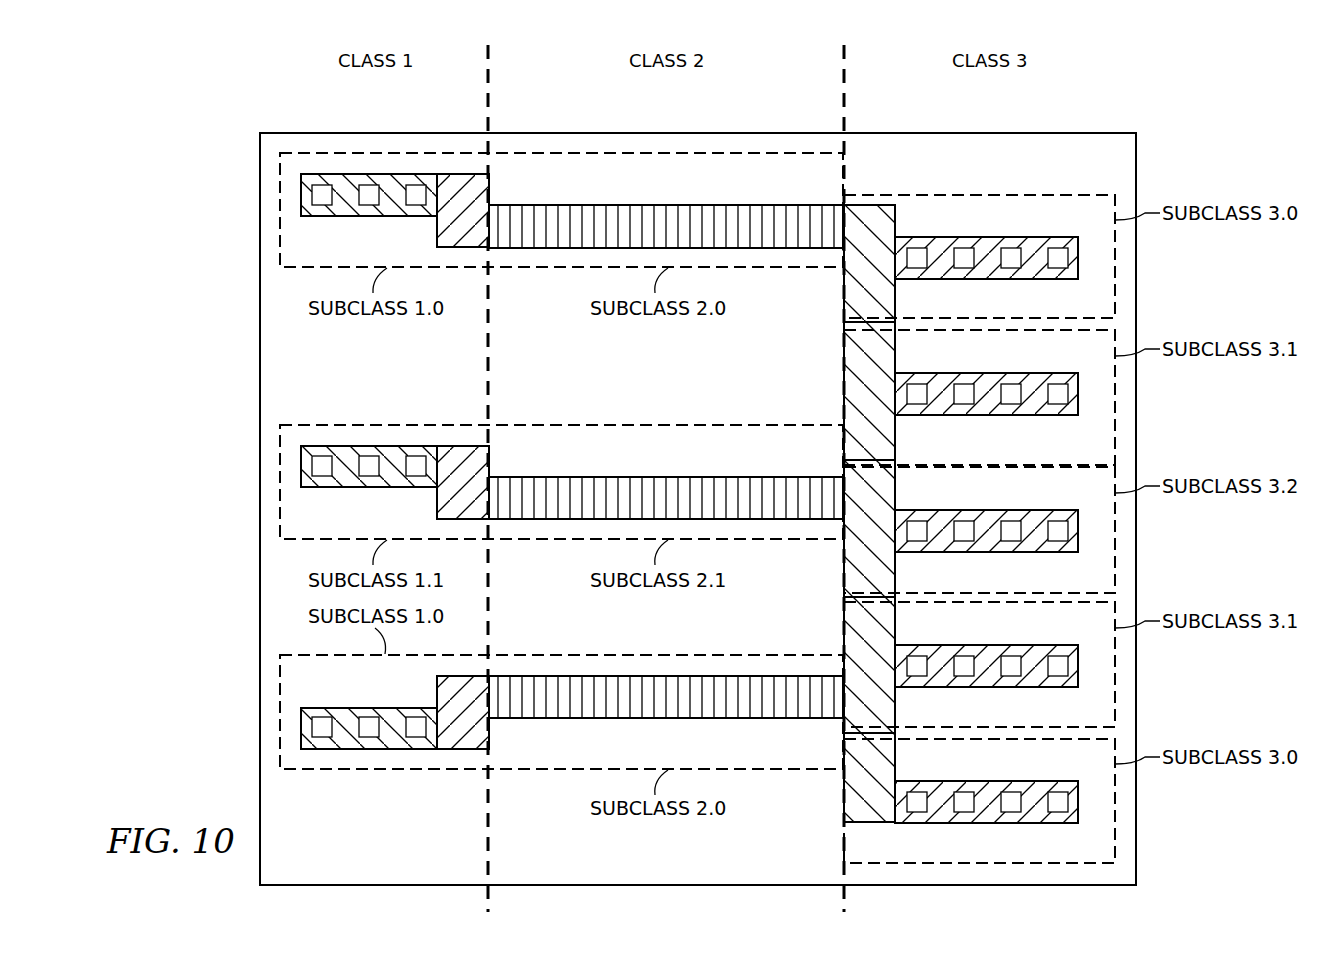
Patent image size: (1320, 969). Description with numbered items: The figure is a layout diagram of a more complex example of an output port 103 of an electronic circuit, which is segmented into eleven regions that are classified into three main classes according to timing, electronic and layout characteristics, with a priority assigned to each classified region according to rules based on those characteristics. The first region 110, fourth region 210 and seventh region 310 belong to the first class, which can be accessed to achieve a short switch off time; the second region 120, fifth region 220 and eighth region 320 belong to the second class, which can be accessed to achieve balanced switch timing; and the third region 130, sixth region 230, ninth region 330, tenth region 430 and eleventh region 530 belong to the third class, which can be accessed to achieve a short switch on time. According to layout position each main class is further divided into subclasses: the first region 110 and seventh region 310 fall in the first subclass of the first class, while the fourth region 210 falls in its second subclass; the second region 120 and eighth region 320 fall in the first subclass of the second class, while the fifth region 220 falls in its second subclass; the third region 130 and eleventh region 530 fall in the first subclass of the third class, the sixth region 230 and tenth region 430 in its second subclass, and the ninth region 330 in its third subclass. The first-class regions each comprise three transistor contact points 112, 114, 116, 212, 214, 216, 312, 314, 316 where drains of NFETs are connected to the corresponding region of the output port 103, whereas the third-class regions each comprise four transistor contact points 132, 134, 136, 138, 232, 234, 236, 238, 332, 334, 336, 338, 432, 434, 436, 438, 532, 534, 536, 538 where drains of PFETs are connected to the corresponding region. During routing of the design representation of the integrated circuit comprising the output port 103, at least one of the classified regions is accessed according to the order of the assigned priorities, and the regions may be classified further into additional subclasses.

The output port 103 is at (224, 344).
The first region 110 is at (318, 178).
The transistor contact point 112 is at (328, 200).
The transistor contact point 114 is at (372, 186).
The transistor contact point 116 is at (416, 203).
The second region 120 is at (572, 215).
The third region 130 is at (1078, 258).
The transistor contact point 132 is at (912, 262).
The transistor contact point 134 is at (966, 251).
The transistor contact point 136 is at (1010, 262).
The transistor contact point 138 is at (1056, 251).
The fourth region 210 is at (318, 450).
The transistor contact point 212 is at (328, 471).
The transistor contact point 214 is at (372, 457).
The transistor contact point 216 is at (416, 474).
The fifth region 220 is at (572, 487).
The sixth region 230 is at (1078, 394).
The transistor contact point 232 is at (912, 398).
The transistor contact point 234 is at (966, 387).
The transistor contact point 236 is at (1010, 398).
The transistor contact point 238 is at (1056, 387).
The seventh region 310 is at (318, 715).
The transistor contact point 312 is at (325, 735).
The transistor contact point 314 is at (367, 722).
The transistor contact point 316 is at (418, 738).
The eighth region 320 is at (572, 712).
The ninth region 330 is at (1078, 531).
The transistor contact point 332 is at (912, 535).
The transistor contact point 334 is at (966, 524).
The transistor contact point 336 is at (1010, 535).
The transistor contact point 338 is at (1056, 524).
The tenth region 430 is at (1078, 666).
The transistor contact point 432 is at (912, 670).
The transistor contact point 434 is at (966, 659).
The transistor contact point 436 is at (1010, 670).
The transistor contact point 438 is at (1056, 659).
The eleventh region 530 is at (1078, 802).
The transistor contact point 532 is at (912, 806).
The transistor contact point 534 is at (966, 795).
The transistor contact point 536 is at (1010, 806).
The transistor contact point 538 is at (1056, 795).